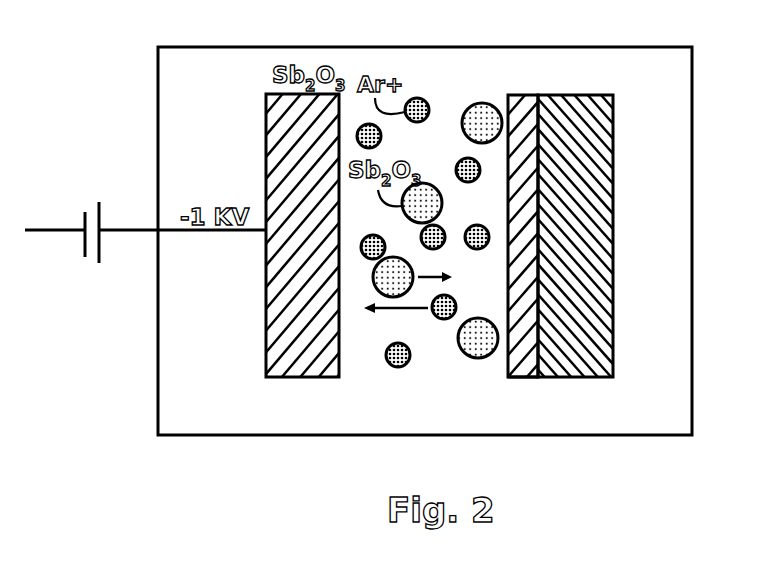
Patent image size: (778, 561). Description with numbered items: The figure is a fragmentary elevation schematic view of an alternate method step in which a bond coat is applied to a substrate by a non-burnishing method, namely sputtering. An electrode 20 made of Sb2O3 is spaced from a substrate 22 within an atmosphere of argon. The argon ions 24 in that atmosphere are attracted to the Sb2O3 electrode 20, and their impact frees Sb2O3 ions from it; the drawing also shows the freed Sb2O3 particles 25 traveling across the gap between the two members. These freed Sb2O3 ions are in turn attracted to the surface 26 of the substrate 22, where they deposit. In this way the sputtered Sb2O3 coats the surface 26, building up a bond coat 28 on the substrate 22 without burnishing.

The electrode 20 is at (266, 355).
The substrate 22 is at (590, 104).
The ions 24 is at (430, 106).
The sputtered antimony oxide particle 25 is at (441, 206).
The surface 26 is at (538, 118).
The bond coat 28 is at (532, 377).